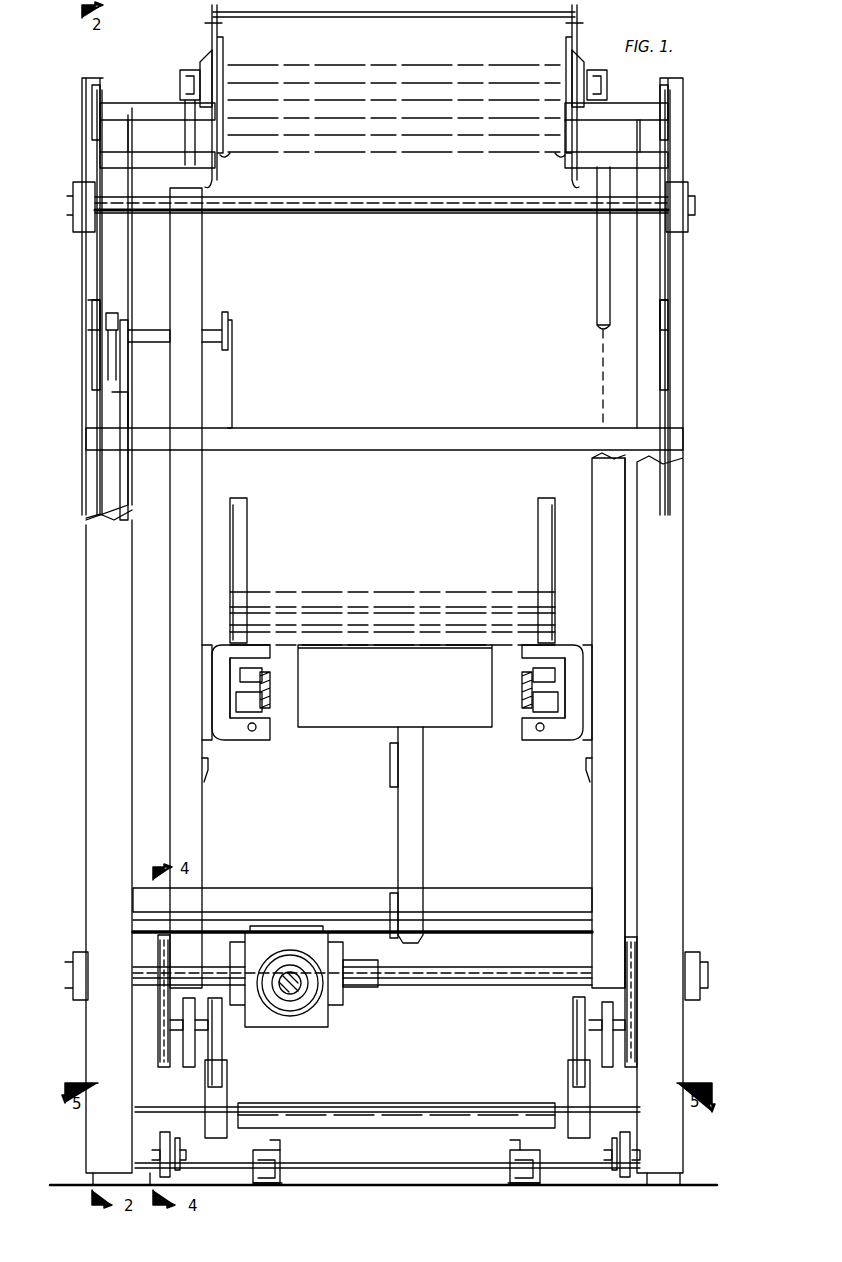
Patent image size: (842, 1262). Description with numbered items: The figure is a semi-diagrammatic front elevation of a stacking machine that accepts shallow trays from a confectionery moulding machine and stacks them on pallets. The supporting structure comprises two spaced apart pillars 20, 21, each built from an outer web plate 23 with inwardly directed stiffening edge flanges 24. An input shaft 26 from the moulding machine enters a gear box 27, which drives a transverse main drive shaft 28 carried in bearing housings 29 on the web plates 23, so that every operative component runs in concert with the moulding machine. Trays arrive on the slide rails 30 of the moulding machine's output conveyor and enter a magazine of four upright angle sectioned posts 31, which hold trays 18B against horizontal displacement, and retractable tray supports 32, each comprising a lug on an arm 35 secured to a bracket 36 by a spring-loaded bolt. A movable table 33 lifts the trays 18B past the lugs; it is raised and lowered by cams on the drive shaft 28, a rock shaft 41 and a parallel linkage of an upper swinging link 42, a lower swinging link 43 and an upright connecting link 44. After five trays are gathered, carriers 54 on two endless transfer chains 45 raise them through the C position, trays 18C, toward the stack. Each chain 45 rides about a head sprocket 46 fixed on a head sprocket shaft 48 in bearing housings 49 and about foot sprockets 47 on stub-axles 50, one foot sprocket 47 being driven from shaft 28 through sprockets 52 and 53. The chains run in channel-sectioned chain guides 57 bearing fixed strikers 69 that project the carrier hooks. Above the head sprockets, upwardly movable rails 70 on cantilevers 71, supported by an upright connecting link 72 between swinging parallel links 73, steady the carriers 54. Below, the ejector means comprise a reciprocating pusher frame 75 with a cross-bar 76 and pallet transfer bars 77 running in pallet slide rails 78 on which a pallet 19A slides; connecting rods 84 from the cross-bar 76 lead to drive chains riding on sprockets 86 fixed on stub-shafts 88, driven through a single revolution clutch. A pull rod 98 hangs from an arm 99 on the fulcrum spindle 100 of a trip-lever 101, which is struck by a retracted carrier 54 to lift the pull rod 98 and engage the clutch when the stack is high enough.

The trays in the B position 18B is at (400, 615).
The trays in the C position 18C is at (394, 82).
The pallet in the A position 19A is at (443, 1103).
The pillar 20 is at (692, 608).
The pillar 21 is at (84, 652).
The outer web plate 23 is at (85, 252).
The stiffening edge flange 24 is at (644, 723).
The input shaft 26 is at (295, 995).
The gear box 27 is at (328, 1015).
The main drive shaft 28 is at (406, 975).
The bearing housing 29 is at (73, 962).
The slide rail 30 is at (268, 712).
The upright angle sectioned post 31 is at (247, 519).
The retractable tray support 32 is at (205, 720).
The table 33 is at (447, 728).
The arm 35 is at (215, 680).
The bracket 36 is at (245, 705).
The rock shaft 41 is at (465, 930).
The upper swinging link 42 is at (390, 756).
The lower swinging link 43 is at (392, 895).
The upright connecting link 44 is at (423, 832).
The transfer chain 45 is at (200, 75).
The head sprocket 46 is at (182, 85).
The foot sprocket 47 is at (212, 1045).
The head sprocket shaft 48 is at (270, 213).
The bearing housing 49 is at (73, 188).
The stub-axle 50 is at (158, 1025).
The sprocket 52 is at (160, 965).
The sprocket 53 is at (160, 1045).
The carrier 54 is at (200, 42).
The chain guide 57 is at (185, 805).
The striker 69 is at (208, 771).
The rail 70 is at (212, 14).
The cantilever 71 is at (120, 162).
The upright connecting link 72 is at (100, 285).
The swinging parallel link 73 is at (100, 104).
The pusher frame 75 is at (500, 1192).
The cross-bar 76 is at (337, 1186).
The pallet transfer bar 77 is at (282, 1158).
The pallet slide rail 78 is at (262, 1186).
The connecting rod 84 is at (160, 1135).
The sprocket 86 is at (160, 1165).
The stub-shaft 88 is at (155, 1155).
The pull rod 98 is at (122, 470).
The arm 99 is at (106, 318).
The fulcrum spindle 100 is at (145, 338).
The trip-lever 101 is at (228, 316).